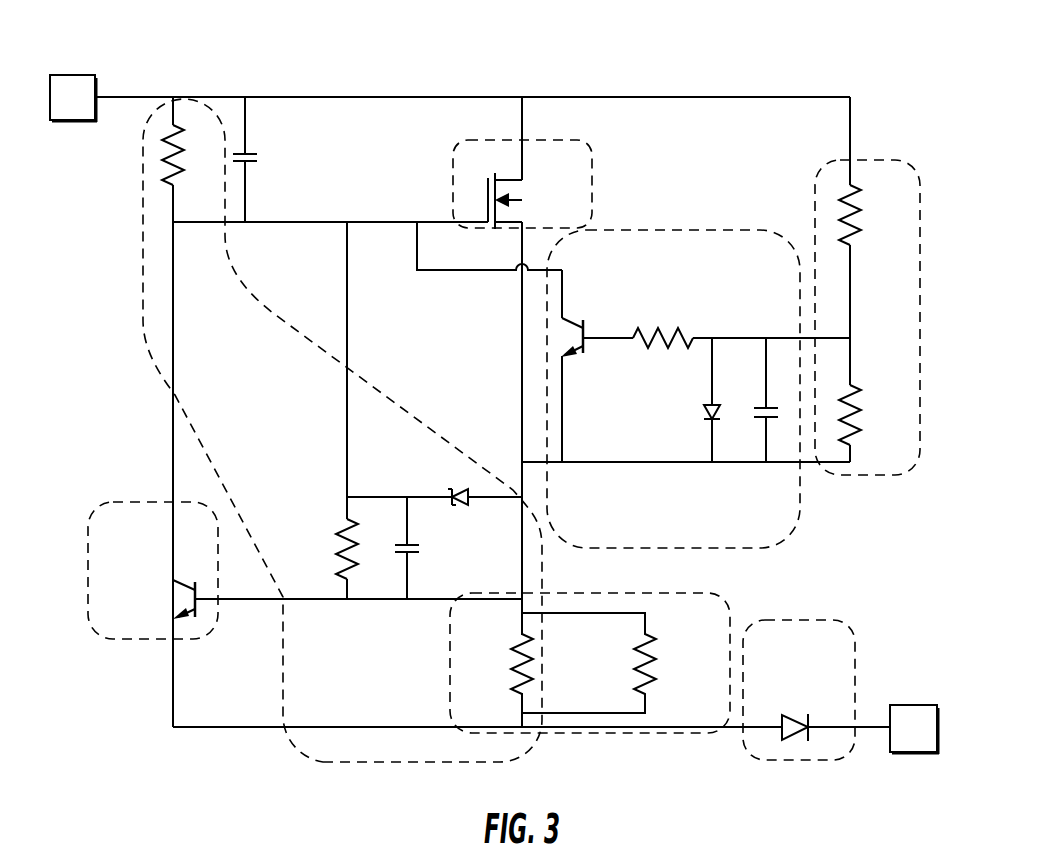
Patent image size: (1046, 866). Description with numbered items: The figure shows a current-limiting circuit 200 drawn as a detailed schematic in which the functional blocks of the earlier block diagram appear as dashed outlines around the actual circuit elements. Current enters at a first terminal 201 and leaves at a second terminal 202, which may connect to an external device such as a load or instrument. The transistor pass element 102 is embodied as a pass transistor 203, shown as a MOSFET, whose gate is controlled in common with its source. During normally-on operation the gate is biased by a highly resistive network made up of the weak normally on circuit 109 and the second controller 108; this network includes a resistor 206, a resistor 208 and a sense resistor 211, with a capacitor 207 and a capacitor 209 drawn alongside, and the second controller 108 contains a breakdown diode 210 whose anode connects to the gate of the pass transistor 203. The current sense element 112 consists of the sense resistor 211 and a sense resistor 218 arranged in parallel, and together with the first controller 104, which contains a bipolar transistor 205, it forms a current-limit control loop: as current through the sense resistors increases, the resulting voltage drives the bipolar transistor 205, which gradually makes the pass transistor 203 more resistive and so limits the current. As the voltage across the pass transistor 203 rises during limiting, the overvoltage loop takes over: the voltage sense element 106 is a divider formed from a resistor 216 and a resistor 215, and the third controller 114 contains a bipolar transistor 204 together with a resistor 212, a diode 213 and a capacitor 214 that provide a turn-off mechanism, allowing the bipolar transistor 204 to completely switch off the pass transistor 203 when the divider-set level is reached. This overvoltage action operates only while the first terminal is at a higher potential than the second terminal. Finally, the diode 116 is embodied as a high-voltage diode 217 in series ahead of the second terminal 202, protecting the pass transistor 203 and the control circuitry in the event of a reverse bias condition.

The current-limiting circuit 200 is at (515, 40).
The first terminal 201 is at (83, 74).
The second terminal 202 is at (910, 705).
The primary current path transistor 203 is at (508, 199).
The voltage sense control loop transistor 204 is at (570, 327).
The weak normally-on and current sense control loop transistor 205 is at (178, 588).
The resistor 206 is at (167, 140).
The capacitor 207 is at (252, 157).
The resistor 208 is at (340, 540).
The capacitor 209 is at (412, 545).
The breakdown diode 210 is at (463, 482).
The resistor 211 is at (515, 655).
The resistor 212 is at (665, 330).
The diode 213 is at (698, 413).
The capacitor 214 is at (762, 408).
The resistor 215 is at (858, 418).
The resistor 216 is at (858, 197).
The high-voltage diode 217 is at (795, 742).
The resistor 218 is at (633, 657).
The transistor pass element 102 is at (551, 184).
The first controller 104 is at (119, 546).
The voltage sense element 106 is at (863, 329).
The second controller 108 is at (342, 430).
The weak normally on circuit 109 is at (222, 424).
The current sense element 112 is at (671, 683).
The third controller 114 is at (658, 273).
The diode 116 is at (781, 668).